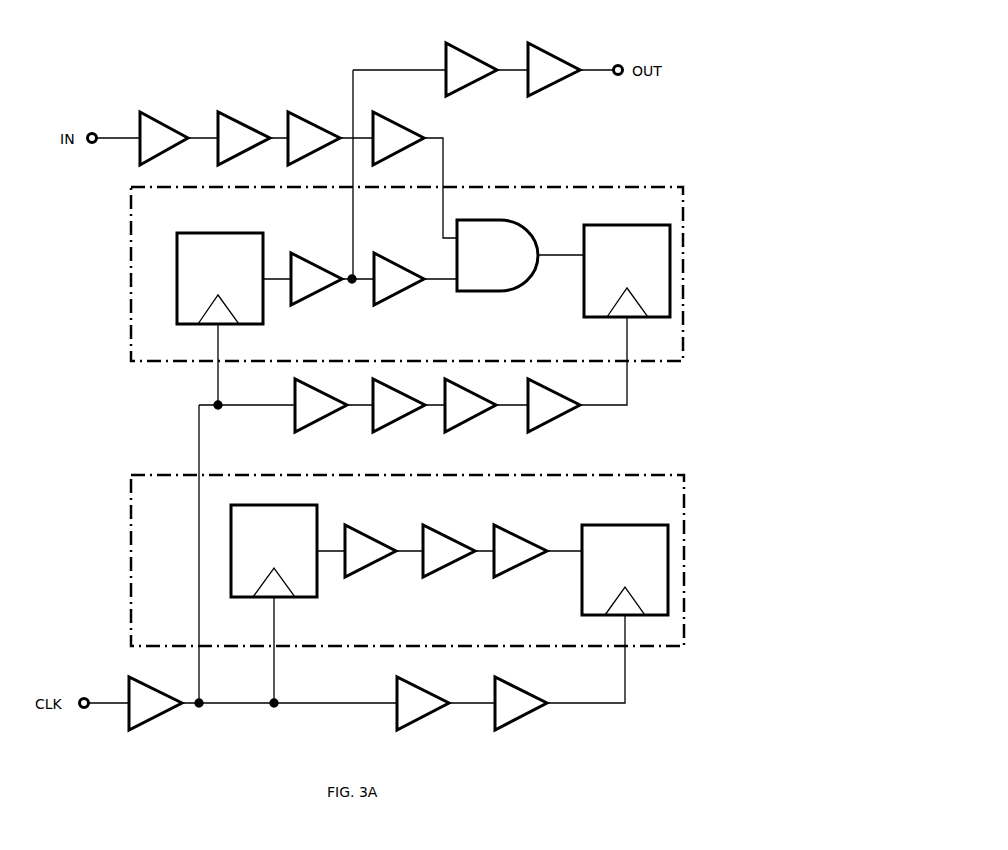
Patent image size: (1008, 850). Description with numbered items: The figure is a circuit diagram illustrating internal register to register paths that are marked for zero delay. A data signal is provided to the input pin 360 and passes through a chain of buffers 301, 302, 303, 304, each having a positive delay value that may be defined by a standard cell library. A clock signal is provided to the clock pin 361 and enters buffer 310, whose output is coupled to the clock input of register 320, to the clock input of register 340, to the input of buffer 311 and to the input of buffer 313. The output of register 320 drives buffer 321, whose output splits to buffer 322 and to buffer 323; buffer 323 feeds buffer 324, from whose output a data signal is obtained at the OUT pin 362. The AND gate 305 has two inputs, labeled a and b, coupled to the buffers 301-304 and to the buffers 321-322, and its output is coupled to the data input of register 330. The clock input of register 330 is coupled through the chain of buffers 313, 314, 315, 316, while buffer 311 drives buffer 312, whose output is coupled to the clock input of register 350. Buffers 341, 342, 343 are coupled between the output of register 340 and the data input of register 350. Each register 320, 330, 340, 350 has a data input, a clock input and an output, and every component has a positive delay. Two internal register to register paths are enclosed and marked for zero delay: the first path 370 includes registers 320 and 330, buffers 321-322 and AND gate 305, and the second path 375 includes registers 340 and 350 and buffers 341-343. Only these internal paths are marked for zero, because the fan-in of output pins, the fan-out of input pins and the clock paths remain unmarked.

The buffer 301 is at (164, 138).
The buffer 302 is at (244, 138).
The buffer 303 is at (314, 138).
The buffer 304 is at (398, 138).
The AND gate 305 is at (497, 255).
The buffer 310 is at (155, 703).
The buffer 311 is at (423, 703).
The buffer 312 is at (521, 703).
The buffer 313 is at (321, 405).
The buffer 314 is at (399, 405).
The buffer 315 is at (470, 405).
The buffer 316 is at (554, 405).
The register 320 is at (220, 278).
The buffer 321 is at (316, 279).
The buffer 322 is at (399, 279).
The buffer 323 is at (471, 69).
The buffer 324 is at (554, 69).
The register 330 is at (627, 271).
The register 340 is at (274, 551).
The buffer 341 is at (370, 551).
The buffer 342 is at (449, 551).
The buffer 343 is at (520, 551).
The register 350 is at (625, 570).
The input pin 360 is at (95, 125).
The clock pin 361 is at (91, 690).
The OUT pin 362 is at (618, 55).
The internal register to register path 370 is at (675, 353).
The internal register to register path 375 is at (675, 640).